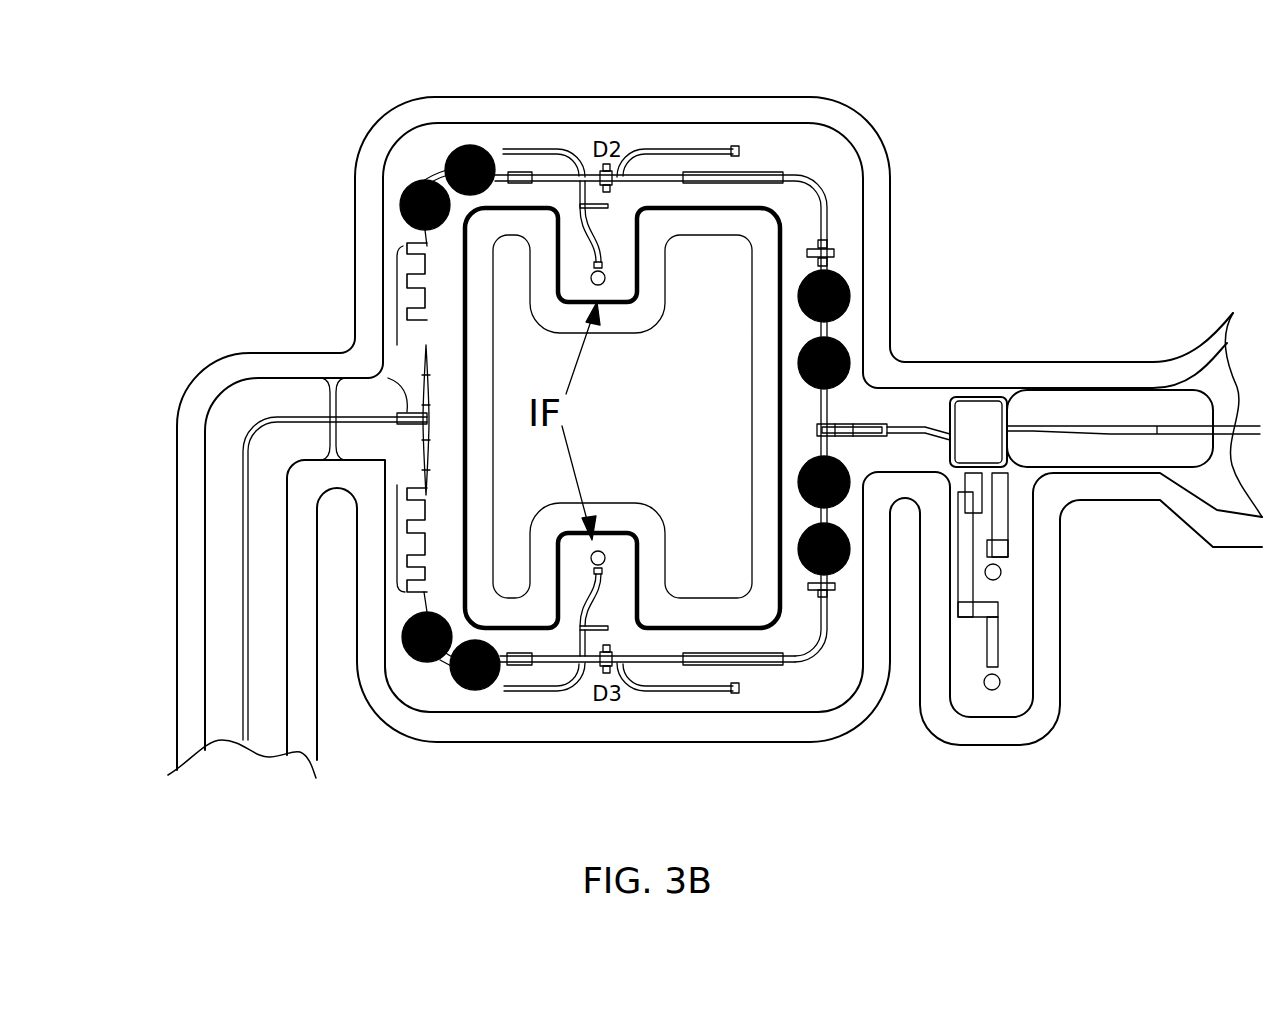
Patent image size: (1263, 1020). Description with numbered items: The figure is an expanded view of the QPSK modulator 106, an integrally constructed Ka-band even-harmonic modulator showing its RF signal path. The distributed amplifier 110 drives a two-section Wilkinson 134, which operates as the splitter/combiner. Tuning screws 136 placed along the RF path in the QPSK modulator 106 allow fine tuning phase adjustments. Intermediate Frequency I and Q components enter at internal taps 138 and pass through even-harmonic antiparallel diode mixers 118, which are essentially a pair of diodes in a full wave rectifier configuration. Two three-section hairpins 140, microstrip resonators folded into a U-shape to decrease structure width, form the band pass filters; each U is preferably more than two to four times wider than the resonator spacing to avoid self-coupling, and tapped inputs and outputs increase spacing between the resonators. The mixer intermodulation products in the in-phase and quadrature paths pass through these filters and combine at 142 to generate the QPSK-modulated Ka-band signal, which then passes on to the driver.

The QPSK modulator 106 is at (640, 423).
The distributed amplifier 110 is at (995, 441).
The even-harmonic antiparallel diode mixers 118 is at (612, 168).
The two-section Wilkinson 134 is at (863, 423).
The tuning screws 136 is at (447, 153).
The internal taps 138 is at (606, 277).
The 3-section hairpins 140 is at (394, 305).
The combining point of RF splitter/combiner 142 is at (350, 362).